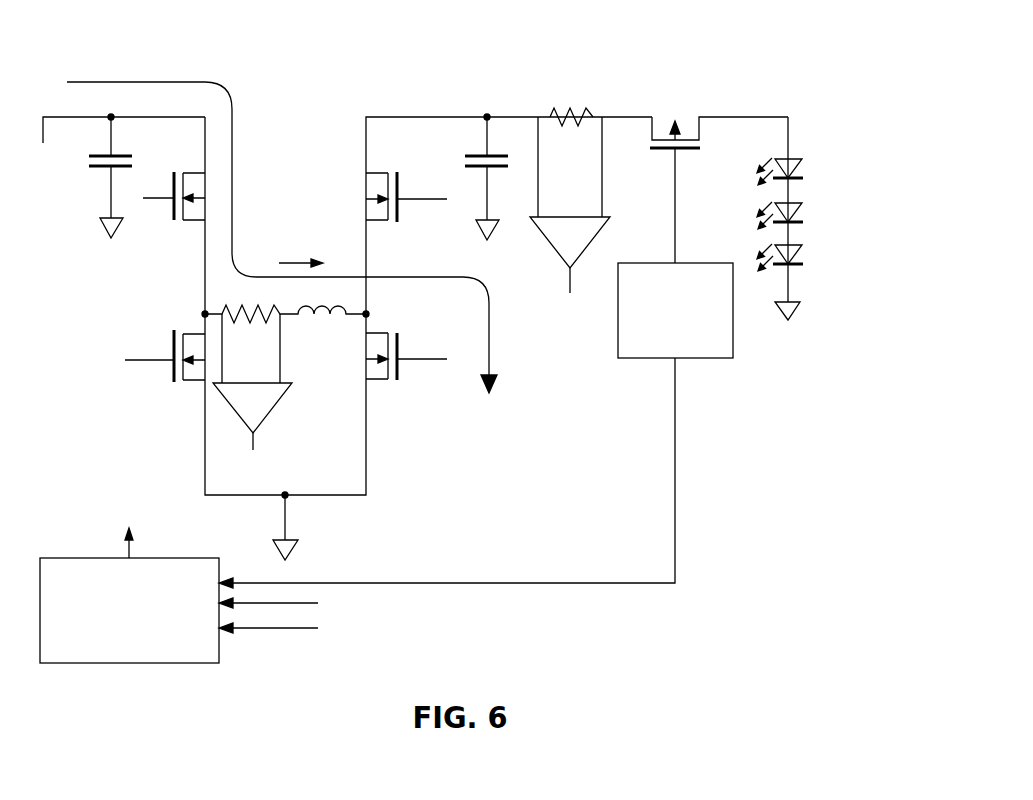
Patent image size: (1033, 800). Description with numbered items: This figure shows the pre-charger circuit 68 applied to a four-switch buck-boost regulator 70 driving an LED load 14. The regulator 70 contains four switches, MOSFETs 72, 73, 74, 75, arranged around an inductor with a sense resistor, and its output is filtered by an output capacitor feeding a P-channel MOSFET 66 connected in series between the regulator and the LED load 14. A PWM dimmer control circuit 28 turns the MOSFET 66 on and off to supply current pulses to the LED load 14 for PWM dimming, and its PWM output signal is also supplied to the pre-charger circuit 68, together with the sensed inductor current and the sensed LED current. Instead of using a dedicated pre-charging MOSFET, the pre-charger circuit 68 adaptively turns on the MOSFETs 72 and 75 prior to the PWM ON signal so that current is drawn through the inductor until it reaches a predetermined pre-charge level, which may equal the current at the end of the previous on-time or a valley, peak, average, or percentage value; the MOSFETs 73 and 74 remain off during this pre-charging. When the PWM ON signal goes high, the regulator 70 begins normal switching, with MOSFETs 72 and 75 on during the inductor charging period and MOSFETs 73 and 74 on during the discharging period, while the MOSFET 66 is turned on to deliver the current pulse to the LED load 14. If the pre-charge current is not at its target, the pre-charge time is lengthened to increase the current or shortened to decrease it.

The 4-switch buck-boost regulator 70 is at (415, 87).
The MOSFET 72 is at (193, 222).
The MOSFET 73 is at (192, 383).
The MOSFET 74 is at (382, 222).
The MOSFET 75 is at (382, 383).
The P-channel MOSFET 66 is at (687, 120).
The LED load 14 is at (826, 203).
The PWM dimmer control circuit 28 is at (698, 262).
The pre-charger circuit 68 is at (219, 650).